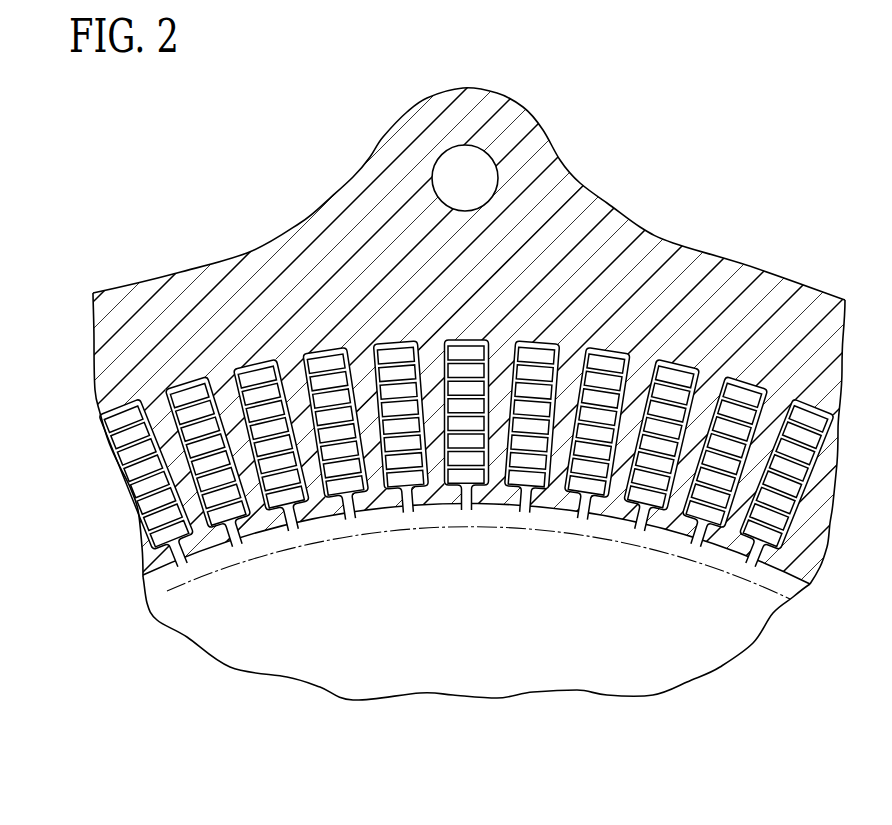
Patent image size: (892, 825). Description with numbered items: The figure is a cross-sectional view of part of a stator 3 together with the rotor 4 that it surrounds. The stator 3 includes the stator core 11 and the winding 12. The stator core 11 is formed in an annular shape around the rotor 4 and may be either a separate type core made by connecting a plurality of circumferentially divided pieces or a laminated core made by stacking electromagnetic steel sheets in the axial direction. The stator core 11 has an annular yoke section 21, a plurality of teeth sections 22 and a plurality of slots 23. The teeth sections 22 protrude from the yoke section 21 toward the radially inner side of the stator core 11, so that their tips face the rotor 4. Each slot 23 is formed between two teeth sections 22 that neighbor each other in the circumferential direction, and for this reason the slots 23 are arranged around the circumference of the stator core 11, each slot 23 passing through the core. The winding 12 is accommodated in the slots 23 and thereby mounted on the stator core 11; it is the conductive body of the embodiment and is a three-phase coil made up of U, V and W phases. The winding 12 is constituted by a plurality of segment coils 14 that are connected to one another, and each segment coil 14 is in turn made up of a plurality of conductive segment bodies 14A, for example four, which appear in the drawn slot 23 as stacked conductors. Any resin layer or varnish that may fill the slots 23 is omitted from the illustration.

The stator 3 is at (446, 407).
The rotor 4 is at (143, 582).
The stator core 11 is at (446, 424).
The winding 12 is at (125, 528).
The segment coil 14 is at (785, 545).
The conductive segment body 14A is at (610, 417).
The yoke section 21 is at (158, 280).
The teeth section 22 is at (727, 532).
The slot 23 is at (312, 348).